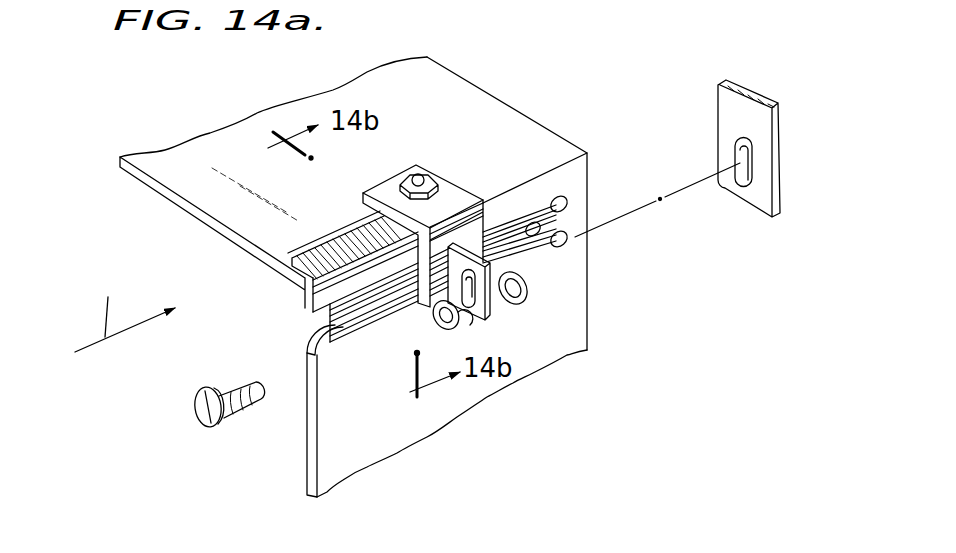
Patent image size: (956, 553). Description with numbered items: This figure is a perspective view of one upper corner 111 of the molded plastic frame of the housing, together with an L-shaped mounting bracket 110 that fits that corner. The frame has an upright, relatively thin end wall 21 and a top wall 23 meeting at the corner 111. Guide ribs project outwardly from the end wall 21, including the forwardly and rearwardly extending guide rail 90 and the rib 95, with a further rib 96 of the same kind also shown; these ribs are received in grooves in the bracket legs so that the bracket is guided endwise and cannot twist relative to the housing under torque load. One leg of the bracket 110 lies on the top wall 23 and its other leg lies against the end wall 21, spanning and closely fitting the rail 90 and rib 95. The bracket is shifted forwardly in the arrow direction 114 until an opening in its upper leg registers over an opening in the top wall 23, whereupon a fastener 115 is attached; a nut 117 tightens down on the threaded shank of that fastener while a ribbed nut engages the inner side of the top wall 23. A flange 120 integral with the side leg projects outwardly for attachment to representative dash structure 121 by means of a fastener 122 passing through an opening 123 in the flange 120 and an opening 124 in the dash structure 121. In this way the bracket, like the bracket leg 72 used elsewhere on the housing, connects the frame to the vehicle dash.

The end wall 21 is at (551, 357).
The top wall 23 is at (172, 150).
The bracket leg 72 is at (567, 203).
The guide rail 90 is at (507, 222).
The rib 95 is at (349, 350).
The rib 96 is at (382, 326).
The L-shaped bracket 110 is at (362, 186).
The upper corner 111 is at (548, 167).
The arrow direction 114 is at (124, 309).
The fastener 115 is at (418, 177).
The nut 117 is at (428, 167).
The flange 120 is at (497, 306).
The dash structure 121 is at (760, 118).
The fastener 122 is at (232, 416).
The opening 123 is at (476, 288).
The opening 124 is at (742, 180).